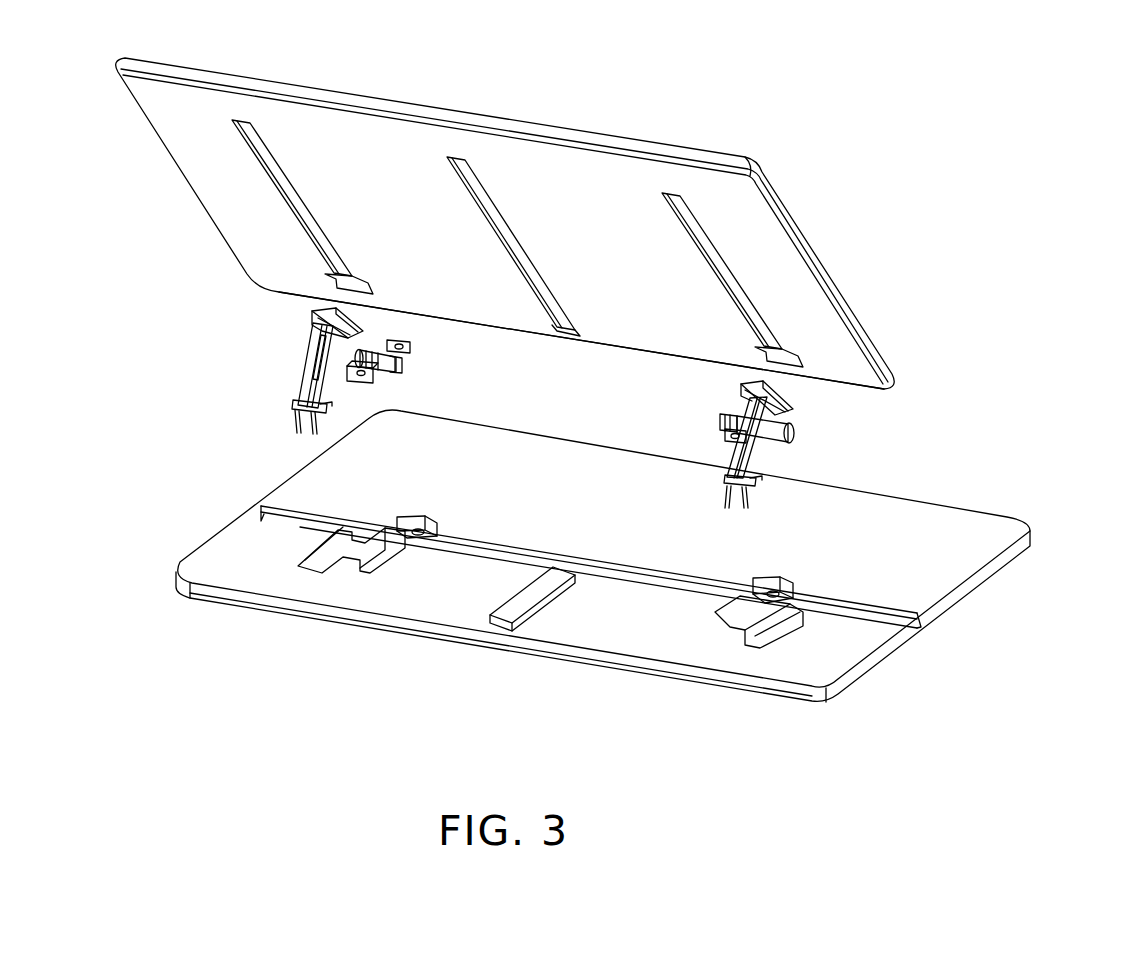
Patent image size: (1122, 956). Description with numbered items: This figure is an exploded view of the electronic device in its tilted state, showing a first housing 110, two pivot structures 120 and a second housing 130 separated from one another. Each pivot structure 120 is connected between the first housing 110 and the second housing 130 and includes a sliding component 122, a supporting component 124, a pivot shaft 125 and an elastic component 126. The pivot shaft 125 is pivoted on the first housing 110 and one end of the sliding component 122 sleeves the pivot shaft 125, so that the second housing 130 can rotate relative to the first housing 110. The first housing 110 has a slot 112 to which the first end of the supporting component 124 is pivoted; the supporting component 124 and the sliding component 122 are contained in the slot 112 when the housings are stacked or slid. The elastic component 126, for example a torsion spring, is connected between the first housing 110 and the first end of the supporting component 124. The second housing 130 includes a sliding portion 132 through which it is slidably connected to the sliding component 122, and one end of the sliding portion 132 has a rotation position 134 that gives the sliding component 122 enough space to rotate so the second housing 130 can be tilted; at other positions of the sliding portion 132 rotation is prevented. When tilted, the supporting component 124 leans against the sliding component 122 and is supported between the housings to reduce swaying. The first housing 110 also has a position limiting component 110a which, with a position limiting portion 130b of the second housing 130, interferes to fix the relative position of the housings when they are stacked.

The first housing 110 is at (426, 607).
The position limiting component 110a is at (506, 628).
The slot 112 is at (752, 637).
The pivot structure 120 is at (706, 412).
The sliding component 122 is at (310, 312).
The supporting component 124 is at (315, 377).
The pivot shaft 125 is at (373, 358).
The elastic component 126 is at (297, 420).
The second housing 130 is at (783, 262).
The position limiting portion 130b is at (452, 170).
The sliding portion 132 is at (717, 285).
The rotation position 134 is at (876, 606).